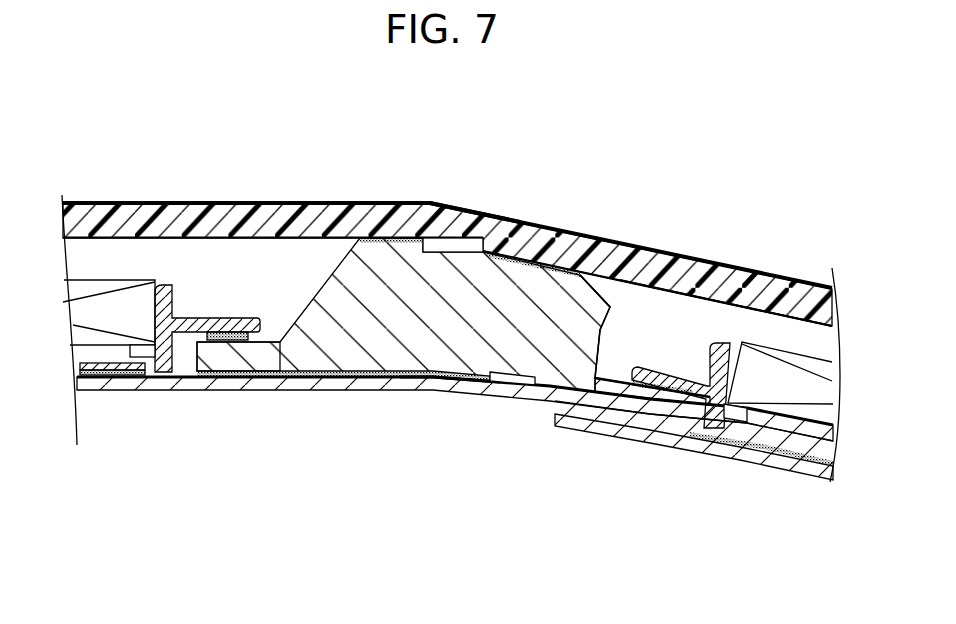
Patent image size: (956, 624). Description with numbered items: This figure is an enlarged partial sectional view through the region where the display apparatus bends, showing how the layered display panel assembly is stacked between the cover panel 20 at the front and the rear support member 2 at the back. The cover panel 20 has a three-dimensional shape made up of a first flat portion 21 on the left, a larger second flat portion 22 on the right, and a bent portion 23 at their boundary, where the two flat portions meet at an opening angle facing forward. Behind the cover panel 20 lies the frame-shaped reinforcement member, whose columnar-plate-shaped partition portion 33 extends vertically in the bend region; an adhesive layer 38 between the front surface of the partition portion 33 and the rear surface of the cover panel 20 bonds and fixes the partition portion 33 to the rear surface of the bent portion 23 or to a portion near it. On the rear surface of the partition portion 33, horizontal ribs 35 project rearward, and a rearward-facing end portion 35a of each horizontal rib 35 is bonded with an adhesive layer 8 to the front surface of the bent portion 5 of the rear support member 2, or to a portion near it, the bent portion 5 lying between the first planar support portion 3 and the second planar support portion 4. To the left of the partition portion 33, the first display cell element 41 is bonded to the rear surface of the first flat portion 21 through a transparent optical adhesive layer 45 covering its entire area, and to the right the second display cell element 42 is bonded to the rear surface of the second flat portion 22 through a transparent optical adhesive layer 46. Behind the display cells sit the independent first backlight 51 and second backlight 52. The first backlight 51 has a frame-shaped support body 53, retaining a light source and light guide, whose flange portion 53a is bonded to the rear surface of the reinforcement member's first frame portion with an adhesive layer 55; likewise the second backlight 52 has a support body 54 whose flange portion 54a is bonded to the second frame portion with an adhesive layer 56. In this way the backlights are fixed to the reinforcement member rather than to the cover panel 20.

The rear support member 2 is at (297, 190).
The first planar support portion 3 is at (199, 202).
The second planar support portion 4 is at (742, 286).
The bent portion 5 is at (462, 208).
The adhesive layer 8 is at (407, 236).
The cover panel 20 is at (303, 402).
The first flat portion 21 is at (175, 391).
The second flat portion 22 is at (700, 440).
The bent portion 23 is at (440, 393).
The partition portion 33 is at (525, 390).
The horizontal rib 35 is at (628, 277).
The rearward-facing end portion 35a is at (600, 300).
The adhesive layer 38 is at (405, 375).
The first display cell element 41 is at (100, 376).
The second display cell element 42 is at (792, 462).
The transparent optical adhesive layer 45 is at (130, 376).
The transparent optical adhesive layer 46 is at (752, 452).
The first backlight 51 is at (117, 262).
The second backlight 52 is at (787, 330).
The support body 53 is at (170, 295).
The flange portion 53a is at (233, 333).
The support body 54 is at (712, 362).
The flange portion 54a is at (641, 372).
The adhesive layer 55 is at (234, 347).
The adhesive layer 56 is at (640, 410).